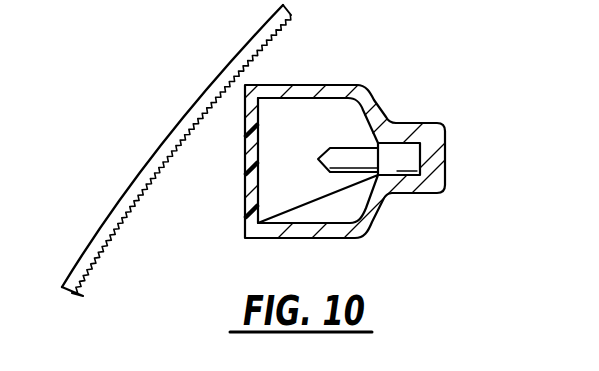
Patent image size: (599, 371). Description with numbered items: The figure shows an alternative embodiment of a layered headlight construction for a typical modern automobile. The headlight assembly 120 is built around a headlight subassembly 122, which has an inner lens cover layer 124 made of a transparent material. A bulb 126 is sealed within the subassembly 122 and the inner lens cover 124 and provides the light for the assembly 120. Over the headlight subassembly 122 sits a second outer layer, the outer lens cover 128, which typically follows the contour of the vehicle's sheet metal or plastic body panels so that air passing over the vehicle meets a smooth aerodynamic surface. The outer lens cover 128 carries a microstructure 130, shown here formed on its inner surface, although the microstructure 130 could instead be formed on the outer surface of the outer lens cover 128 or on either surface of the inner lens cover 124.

The headlight assembly 120 is at (411, 98).
The headlight subassembly 122 is at (372, 92).
The inner lens cover layer 124 is at (245, 212).
The bulb 126 is at (339, 148).
The outer lens cover 128 is at (157, 145).
The microstructure 130 is at (143, 190).